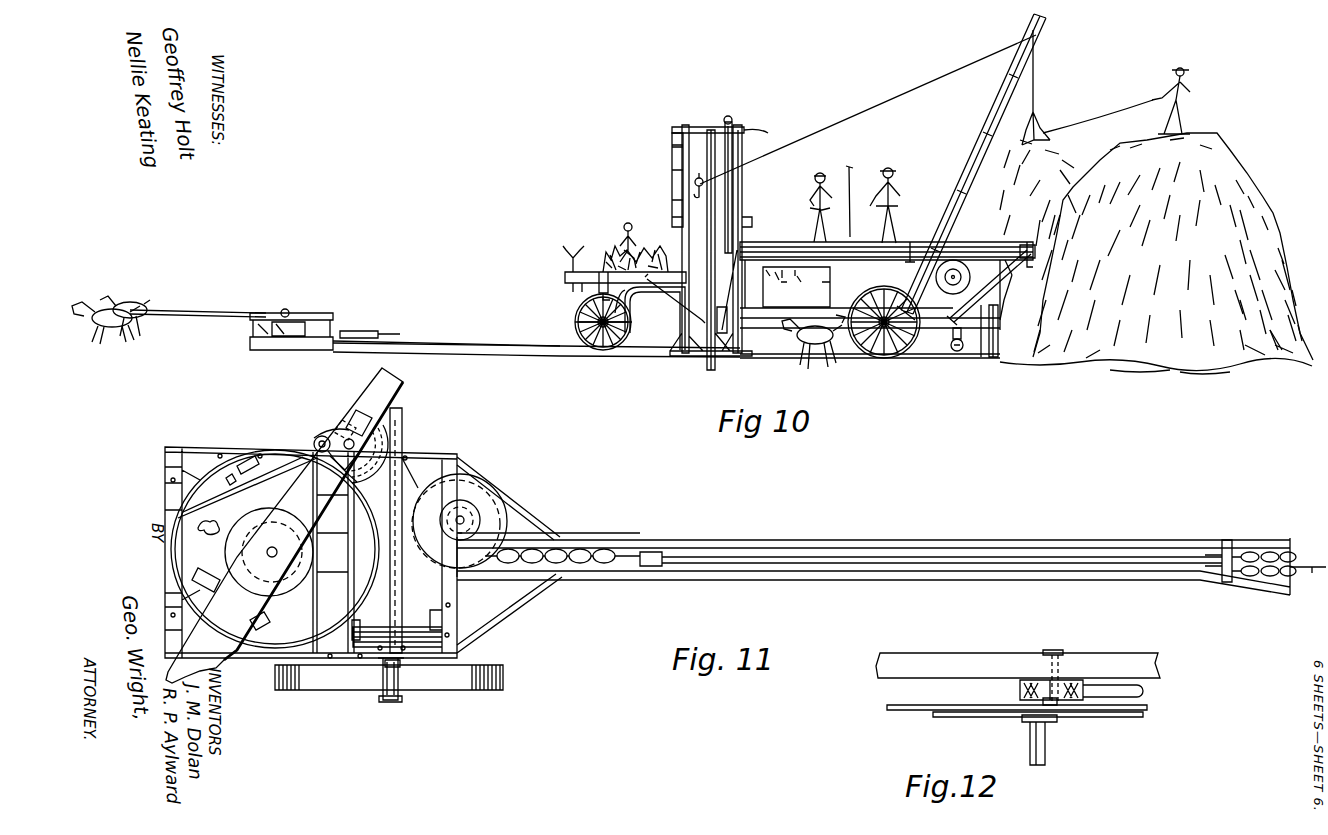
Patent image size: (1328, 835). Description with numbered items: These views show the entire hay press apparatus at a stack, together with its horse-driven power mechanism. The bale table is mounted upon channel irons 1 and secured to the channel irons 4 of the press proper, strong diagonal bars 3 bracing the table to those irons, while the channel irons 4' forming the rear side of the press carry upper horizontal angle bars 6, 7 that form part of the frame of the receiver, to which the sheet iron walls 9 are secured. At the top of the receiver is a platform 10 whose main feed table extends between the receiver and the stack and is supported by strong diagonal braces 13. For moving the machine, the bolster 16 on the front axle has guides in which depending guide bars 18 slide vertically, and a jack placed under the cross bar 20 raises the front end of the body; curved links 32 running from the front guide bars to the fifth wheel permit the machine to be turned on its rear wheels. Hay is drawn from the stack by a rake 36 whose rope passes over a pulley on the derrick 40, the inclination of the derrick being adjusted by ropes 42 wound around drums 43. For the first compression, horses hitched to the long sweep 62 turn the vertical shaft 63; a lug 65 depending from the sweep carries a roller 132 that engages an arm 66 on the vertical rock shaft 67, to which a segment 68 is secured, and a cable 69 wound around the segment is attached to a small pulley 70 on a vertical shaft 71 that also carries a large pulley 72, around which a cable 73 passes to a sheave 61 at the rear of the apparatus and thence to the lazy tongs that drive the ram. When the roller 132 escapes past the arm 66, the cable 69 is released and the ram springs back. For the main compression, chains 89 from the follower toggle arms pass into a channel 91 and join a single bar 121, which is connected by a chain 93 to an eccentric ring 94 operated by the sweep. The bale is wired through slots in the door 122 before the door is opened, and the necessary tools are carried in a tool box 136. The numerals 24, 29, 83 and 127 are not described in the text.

In FIG. 10, the channel irons 1 is at (565, 278).
In FIG. 10, the diagonal bars 3 is at (661, 322).
In FIG. 10, the channel irons of the press proper 4 is at (711, 233).
In FIG. 10, the channel irons forming rear side of press 4' is at (766, 132).
In FIG. 10, the upper horizontal angle bar 6 is at (1012, 278).
In FIG. 10, the upper horizontal angle bar 7 is at (1008, 297).
In FIG. 10, the sheet iron walls 9 is at (870, 286).
In FIG. 10, the platform 10 is at (800, 242).
In FIG. 10, the diagonal braces 13 is at (1008, 252).
In FIG. 10, the bolster 16 is at (585, 300).
In FIG. 10, the guide bars 18 is at (600, 270).
In FIG. 10, the cross bar 20 is at (566, 290).
In FIG. 10, the wheel 24 is at (912, 360).
In FIG. 10, the pulley 29 is at (733, 118).
In FIG. 10, the curved link 32 is at (675, 307).
In FIG. 10, the rake 36 is at (1040, 125).
In FIG. 10, the derrick 40 is at (988, 128).
In FIG. 10, the ropes 42 is at (851, 116).
In FIG. 10, the drums 43 is at (693, 192).
In FIG. 10, the sheave 61 is at (956, 352).
In FIG. 10, the sweep 62 is at (196, 312).
In FIG. 11, the sweep 62 is at (170, 668).
In FIG. 12, the sweep 62 is at (974, 663).
In FIG. 10, the vertical shaft 63 is at (300, 310).
In FIG. 11, the vertical shaft 63 is at (266, 550).
In FIG. 11, the lug 65 is at (320, 436).
In FIG. 12, the lug 65 is at (1062, 652).
In FIG. 11, the arm 66 is at (347, 439).
In FIG. 12, the arm 66 is at (1143, 691).
In FIG. 11, the vertical rock shaft 67 is at (316, 440).
In FIG. 12, the vertical rock shaft 67 is at (1032, 742).
In FIG. 11, the segment 68 is at (403, 413).
In FIG. 12, the segment 68 is at (1105, 720).
In FIG. 11, the cable 69 is at (420, 497).
In FIG. 12, the cable 69 is at (908, 712).
In FIG. 10, the small pulley 70 is at (382, 336).
In FIG. 11, the small pulley 70 is at (477, 507).
In FIG. 11, the vertical shaft 71 is at (466, 520).
In FIG. 11, the large pulley 72 is at (458, 459).
In FIG. 11, the cable 73 is at (1313, 578).
In FIG. 10, the post 83 is at (989, 358).
In FIG. 11, the chains 89 is at (1268, 553).
In FIG. 10, the channel 91 is at (525, 343).
In FIG. 11, the channel 91 is at (1168, 540).
In FIG. 11, the chain 93 is at (612, 540).
In FIG. 11, the eccentric ring 94 is at (296, 662).
In FIG. 11, the single bar 121 is at (720, 555).
In FIG. 10, the door 122 is at (672, 165).
In FIG. 10, the crank 127 is at (571, 255).
In FIG. 11, the roller 132 is at (378, 430).
In FIG. 12, the roller 132 is at (1020, 691).
In FIG. 10, the tool box 136 is at (796, 287).